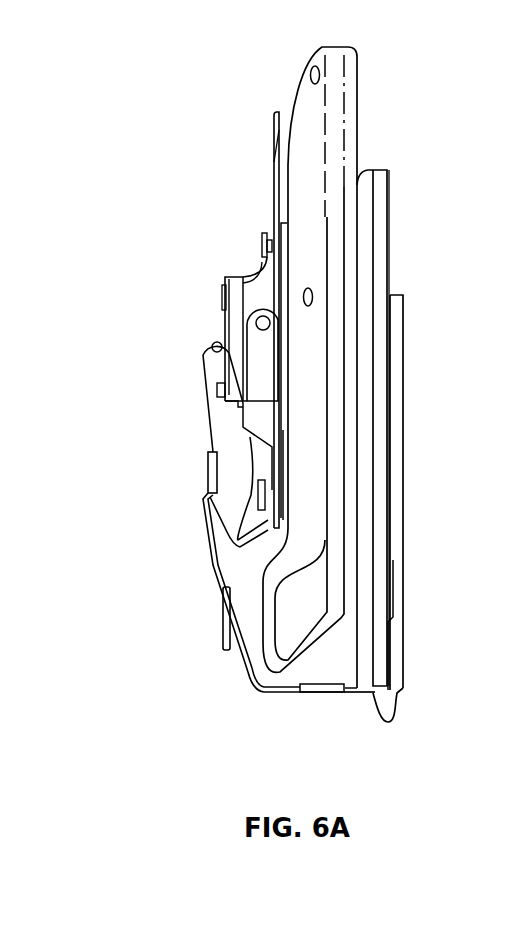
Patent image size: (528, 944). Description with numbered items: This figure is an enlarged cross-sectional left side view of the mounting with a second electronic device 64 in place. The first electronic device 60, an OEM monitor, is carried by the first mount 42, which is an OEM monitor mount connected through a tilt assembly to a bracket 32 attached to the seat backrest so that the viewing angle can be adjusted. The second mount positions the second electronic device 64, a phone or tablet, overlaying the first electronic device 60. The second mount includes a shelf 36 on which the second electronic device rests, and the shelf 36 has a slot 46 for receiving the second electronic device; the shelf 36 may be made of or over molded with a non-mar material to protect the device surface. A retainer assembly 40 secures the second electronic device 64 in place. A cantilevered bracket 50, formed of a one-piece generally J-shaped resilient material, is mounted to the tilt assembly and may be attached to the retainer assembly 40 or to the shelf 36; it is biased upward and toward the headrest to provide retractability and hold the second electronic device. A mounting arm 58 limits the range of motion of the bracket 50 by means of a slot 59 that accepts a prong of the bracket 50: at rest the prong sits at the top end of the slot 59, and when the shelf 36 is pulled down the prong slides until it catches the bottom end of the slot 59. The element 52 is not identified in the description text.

The first electronic device 60 is at (360, 103).
The first mount 42 is at (272, 179).
The second electronic device 64 is at (390, 216).
The retainer assembly 40 is at (412, 383).
The shelf 36 is at (397, 645).
The slot 46 is at (352, 678).
The base 52 is at (258, 682).
The bracket 50 is at (210, 477).
The slot 59 is at (230, 636).
The mounting arm 58 is at (218, 431).
The bracket 32 is at (262, 344).